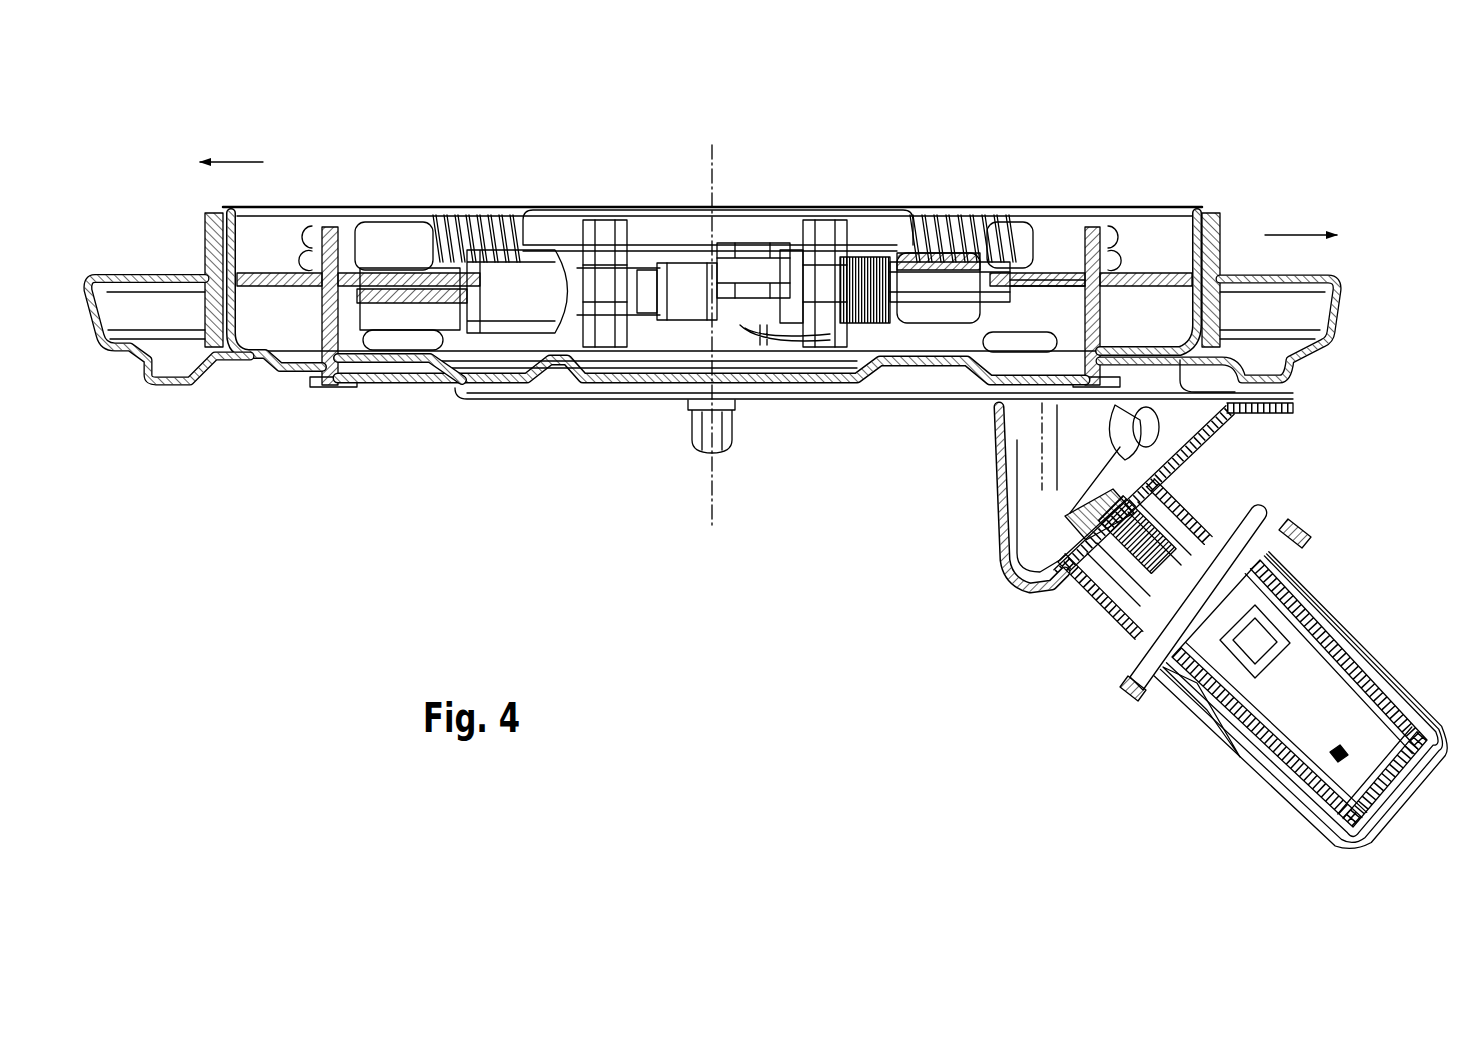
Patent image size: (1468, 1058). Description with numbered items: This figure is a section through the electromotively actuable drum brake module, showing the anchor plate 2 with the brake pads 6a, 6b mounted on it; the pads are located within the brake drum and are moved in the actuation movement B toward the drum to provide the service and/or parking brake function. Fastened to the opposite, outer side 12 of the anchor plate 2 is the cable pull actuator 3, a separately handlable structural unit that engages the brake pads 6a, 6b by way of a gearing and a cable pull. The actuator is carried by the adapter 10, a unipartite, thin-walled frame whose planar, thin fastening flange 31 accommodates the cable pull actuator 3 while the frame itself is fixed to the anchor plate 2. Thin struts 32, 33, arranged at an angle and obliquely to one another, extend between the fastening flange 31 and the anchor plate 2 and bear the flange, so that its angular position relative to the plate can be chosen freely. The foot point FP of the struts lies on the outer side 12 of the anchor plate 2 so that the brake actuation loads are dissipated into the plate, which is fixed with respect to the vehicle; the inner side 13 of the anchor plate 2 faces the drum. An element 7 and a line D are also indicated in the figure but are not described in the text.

The anchor plate 2 is at (224, 387).
The cable pull actuator 3 is at (1228, 660).
The brake pad 6a is at (245, 255).
The brake pad 6b is at (1180, 265).
The connector housing 7 is at (1297, 707).
The adapter 10 is at (1205, 455).
The outer side of the anchor plate 12 is at (181, 387).
The inner side of the anchor plate 13 is at (145, 310).
The fastening flange 31 is at (1083, 592).
The strut 32 is at (997, 488).
The strut 33 is at (1007, 555).
The actuation movement B is at (1297, 235).
The axis D is at (714, 512).
The foot point FP is at (1058, 395).